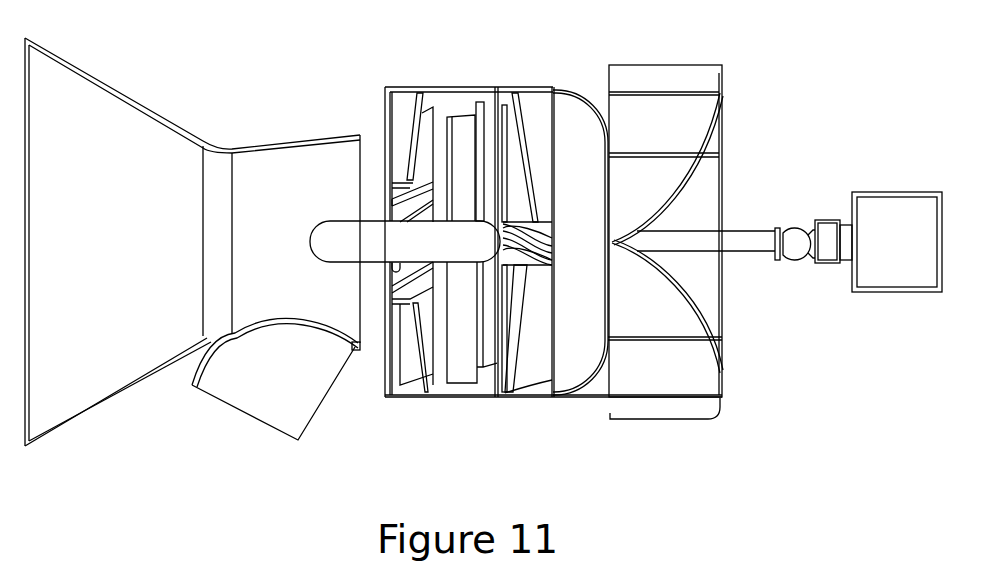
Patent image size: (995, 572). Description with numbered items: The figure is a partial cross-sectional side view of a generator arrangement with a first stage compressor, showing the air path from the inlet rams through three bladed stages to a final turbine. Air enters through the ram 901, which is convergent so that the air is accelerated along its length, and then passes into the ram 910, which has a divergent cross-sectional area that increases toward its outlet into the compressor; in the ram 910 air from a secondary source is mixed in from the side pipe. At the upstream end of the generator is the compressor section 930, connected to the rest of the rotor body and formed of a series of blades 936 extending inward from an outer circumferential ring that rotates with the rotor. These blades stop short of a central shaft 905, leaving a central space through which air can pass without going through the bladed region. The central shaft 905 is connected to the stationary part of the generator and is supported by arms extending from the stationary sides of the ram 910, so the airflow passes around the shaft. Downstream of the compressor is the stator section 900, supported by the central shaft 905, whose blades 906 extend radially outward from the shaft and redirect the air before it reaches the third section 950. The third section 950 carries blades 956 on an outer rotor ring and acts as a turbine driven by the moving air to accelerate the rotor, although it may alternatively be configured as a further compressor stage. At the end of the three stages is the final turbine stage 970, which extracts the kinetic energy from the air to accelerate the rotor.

The ram 901 is at (132, 98).
The ram 910 is at (300, 137).
The central shaft 905 is at (372, 252).
The blades 936 is at (405, 108).
The blades 906 is at (458, 138).
The blades 956 is at (528, 115).
The compressor section 930 is at (393, 266).
The stator section 900 is at (465, 266).
The third section 950 is at (534, 266).
The final turbine stage 970 is at (610, 428).